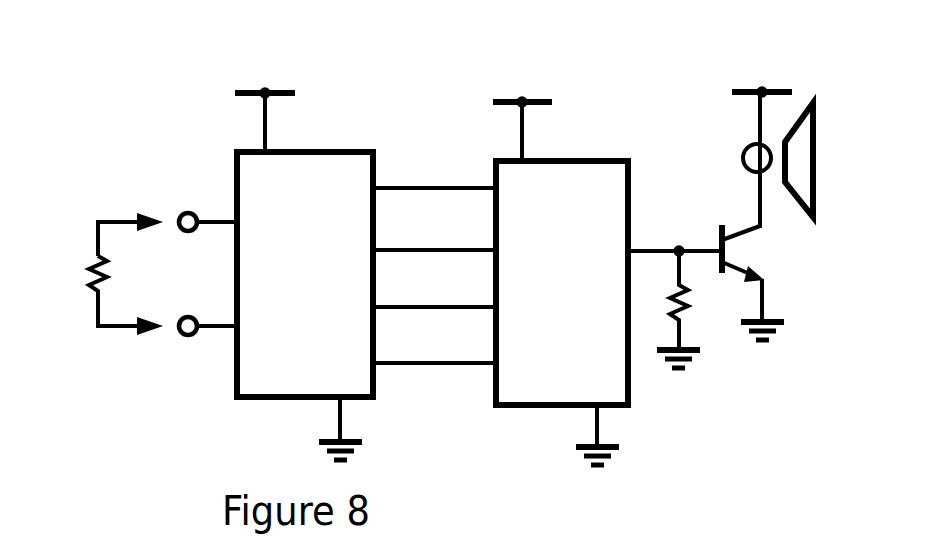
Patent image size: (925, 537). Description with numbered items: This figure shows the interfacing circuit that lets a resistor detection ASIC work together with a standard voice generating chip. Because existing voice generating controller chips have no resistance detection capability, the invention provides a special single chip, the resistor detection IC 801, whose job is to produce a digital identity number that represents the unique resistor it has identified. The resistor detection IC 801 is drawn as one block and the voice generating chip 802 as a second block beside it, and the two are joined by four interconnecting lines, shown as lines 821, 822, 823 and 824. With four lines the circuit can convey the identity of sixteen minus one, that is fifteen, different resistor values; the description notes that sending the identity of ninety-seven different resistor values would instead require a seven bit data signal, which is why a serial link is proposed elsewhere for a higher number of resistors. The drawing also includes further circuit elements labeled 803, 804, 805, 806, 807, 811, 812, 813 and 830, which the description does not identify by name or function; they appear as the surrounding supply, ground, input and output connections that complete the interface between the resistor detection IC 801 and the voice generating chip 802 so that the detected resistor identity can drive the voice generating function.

The resistor detection IC 801 is at (333, 178).
The voice generating chip 802 is at (590, 187).
The power supply 803 is at (258, 88).
The ground 804 is at (338, 400).
The speaker 805 is at (817, 136).
The transistor 806 is at (705, 248).
The resistor 807 is at (688, 313).
The input terminal 811 is at (222, 219).
The termination resistor 812 is at (88, 275).
The input terminal 813 is at (217, 328).
The signal line 821 is at (467, 187).
The signal line 822 is at (407, 249).
The signal line 823 is at (413, 308).
The signal line 824 is at (453, 366).
The collector lead 830 is at (737, 239).